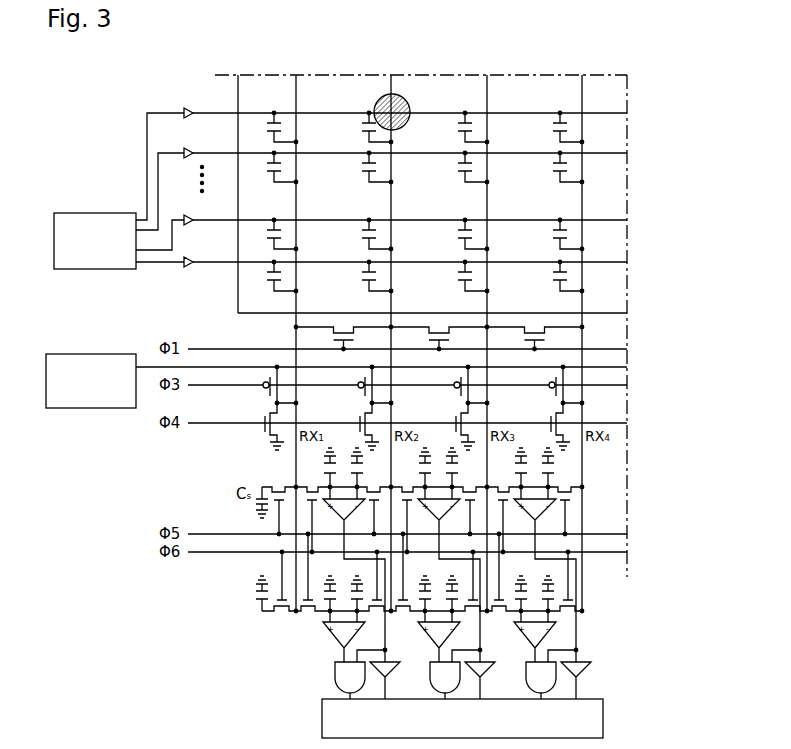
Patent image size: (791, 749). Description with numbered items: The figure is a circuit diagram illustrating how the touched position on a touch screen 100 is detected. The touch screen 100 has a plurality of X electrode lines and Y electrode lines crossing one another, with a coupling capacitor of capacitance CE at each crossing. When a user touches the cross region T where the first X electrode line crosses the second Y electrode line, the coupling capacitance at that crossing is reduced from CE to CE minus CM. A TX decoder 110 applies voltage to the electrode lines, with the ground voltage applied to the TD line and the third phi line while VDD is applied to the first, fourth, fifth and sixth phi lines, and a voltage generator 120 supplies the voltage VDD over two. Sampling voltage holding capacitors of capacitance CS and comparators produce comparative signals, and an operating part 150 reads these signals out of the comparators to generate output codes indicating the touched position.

The touch screen 100 is at (618, 187).
The TX decoder 110 is at (93, 212).
The voltage generator 120 is at (92, 352).
The operating part 150 is at (604, 718).
The cross region T is at (407, 97).